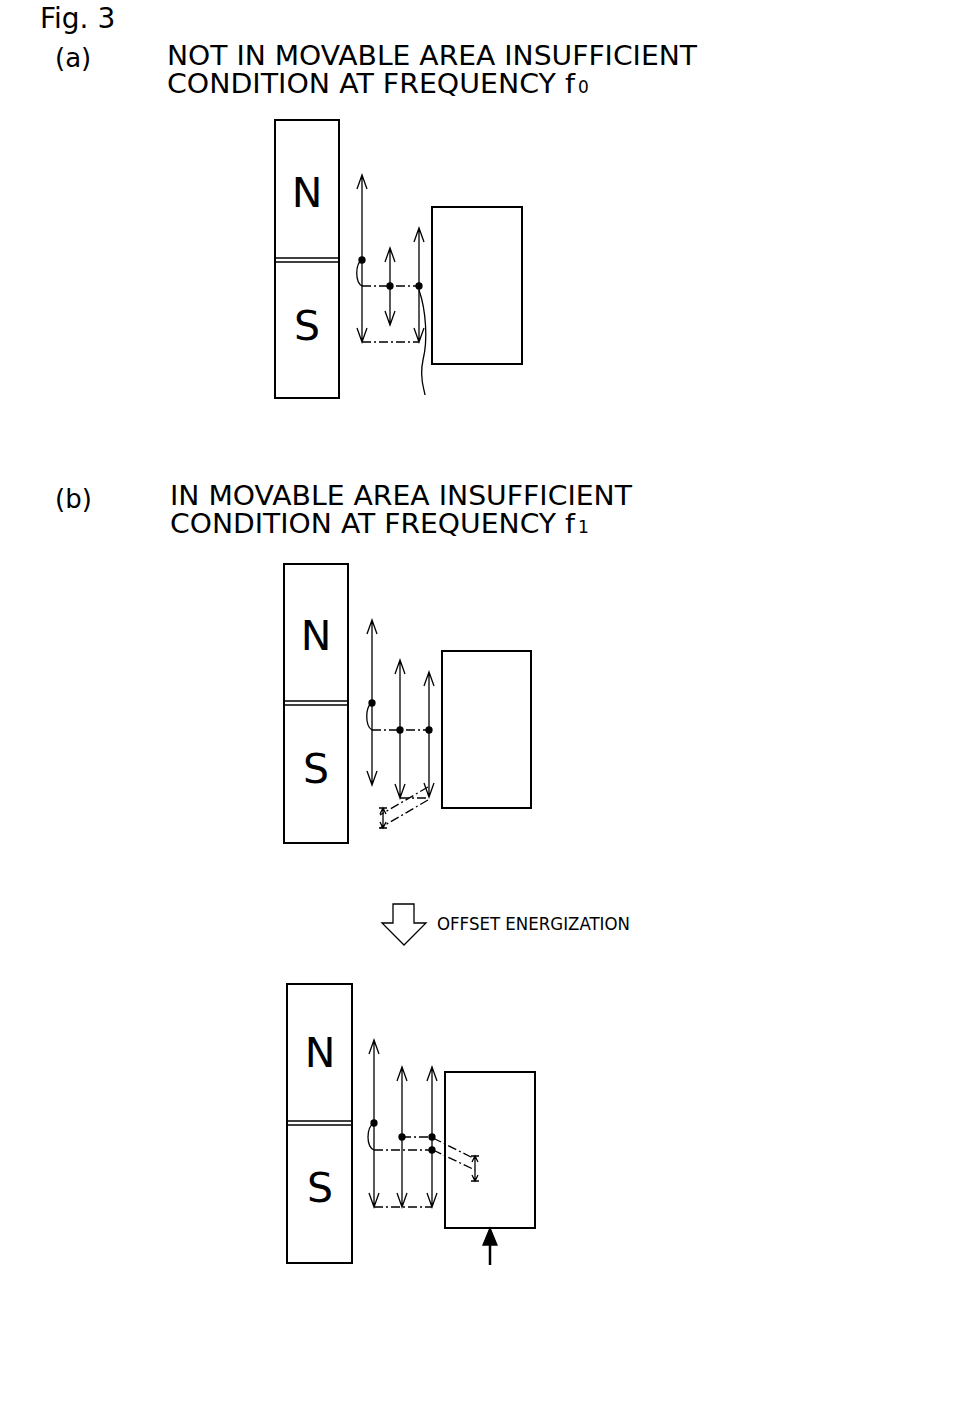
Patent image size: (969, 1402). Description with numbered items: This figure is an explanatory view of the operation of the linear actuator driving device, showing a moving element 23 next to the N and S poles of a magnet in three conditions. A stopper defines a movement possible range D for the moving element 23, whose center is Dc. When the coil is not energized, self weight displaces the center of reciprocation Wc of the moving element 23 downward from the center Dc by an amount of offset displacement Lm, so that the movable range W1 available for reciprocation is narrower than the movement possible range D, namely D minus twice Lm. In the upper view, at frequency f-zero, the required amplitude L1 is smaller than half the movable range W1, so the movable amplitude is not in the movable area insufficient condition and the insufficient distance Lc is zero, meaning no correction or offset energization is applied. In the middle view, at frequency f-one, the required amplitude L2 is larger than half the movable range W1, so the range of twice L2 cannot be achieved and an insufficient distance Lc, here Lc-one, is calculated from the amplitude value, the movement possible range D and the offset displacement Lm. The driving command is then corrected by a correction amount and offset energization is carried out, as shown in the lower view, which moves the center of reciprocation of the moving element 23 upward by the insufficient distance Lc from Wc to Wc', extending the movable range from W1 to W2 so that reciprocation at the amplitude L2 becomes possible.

The moving element 23 is at (522, 307).
The movement possible range D is at (362, 227).
The center of the movement possible range Dc is at (362, 260).
The amount of offset displacement Lm is at (357, 273).
The amplitude value at frequency f0 L1 is at (387, 296).
The amplitude value at frequency f1 L2 is at (402, 1097).
The movable range W1 is at (423, 703).
The extended movable range W2 is at (433, 1115).
The center of reciprocation Wc is at (427, 1042).
The shifted center of reciprocation Wc' is at (426, 972).
The insufficient distance Lc is at (483, 1172).